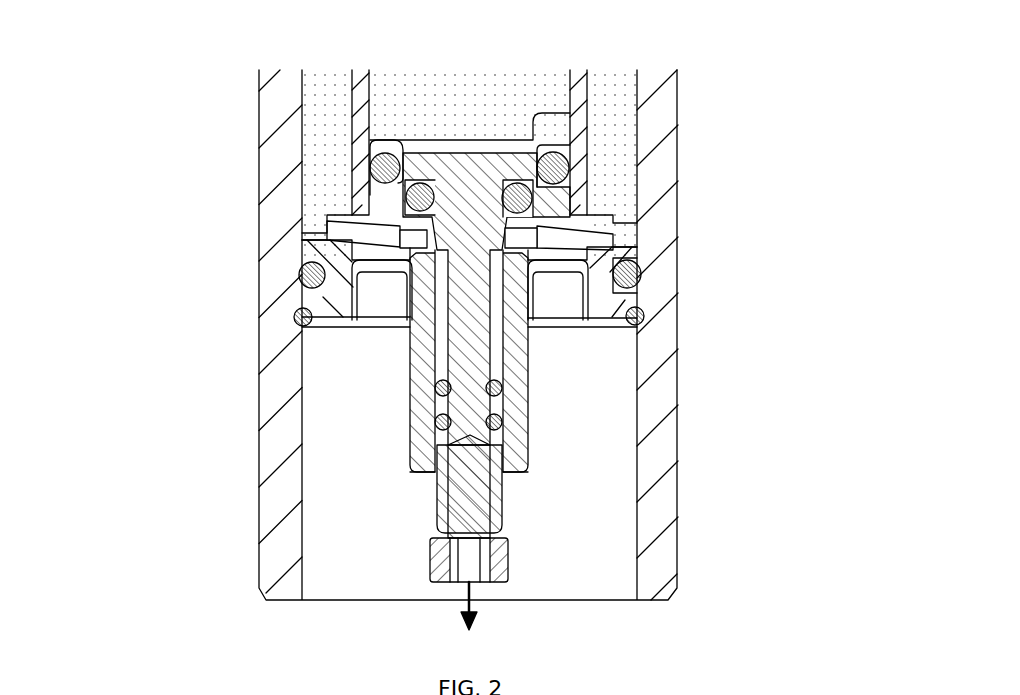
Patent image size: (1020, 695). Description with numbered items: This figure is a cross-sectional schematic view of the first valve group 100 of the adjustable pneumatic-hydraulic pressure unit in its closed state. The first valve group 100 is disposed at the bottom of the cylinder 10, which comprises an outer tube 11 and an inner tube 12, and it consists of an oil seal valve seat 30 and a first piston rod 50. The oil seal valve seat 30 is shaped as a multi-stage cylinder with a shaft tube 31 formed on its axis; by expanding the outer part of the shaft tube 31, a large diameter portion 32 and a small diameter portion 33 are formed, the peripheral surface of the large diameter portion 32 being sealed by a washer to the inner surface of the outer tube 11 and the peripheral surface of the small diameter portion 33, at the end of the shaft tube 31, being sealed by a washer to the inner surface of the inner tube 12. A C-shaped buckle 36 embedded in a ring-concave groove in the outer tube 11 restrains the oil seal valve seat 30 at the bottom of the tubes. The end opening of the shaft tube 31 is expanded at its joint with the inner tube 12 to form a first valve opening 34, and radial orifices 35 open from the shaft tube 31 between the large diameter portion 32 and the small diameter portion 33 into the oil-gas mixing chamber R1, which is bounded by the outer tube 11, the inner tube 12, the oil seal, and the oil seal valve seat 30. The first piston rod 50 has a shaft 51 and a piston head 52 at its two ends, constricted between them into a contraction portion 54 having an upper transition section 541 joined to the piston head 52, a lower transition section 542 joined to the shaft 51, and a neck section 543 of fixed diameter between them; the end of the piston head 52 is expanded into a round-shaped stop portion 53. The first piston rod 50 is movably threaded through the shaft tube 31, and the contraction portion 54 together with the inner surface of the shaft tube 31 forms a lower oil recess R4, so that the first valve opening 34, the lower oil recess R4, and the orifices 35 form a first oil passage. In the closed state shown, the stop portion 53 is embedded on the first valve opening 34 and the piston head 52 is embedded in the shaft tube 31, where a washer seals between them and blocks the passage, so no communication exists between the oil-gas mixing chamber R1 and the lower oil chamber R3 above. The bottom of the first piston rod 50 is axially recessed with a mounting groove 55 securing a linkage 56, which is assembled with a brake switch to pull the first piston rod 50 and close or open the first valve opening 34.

The cylinder 10 is at (370, 335).
The outer tube 11 is at (280, 123).
The inner tube 12 is at (363, 153).
The oil seal valve seat 30 is at (443, 318).
The shaft tube 31 is at (425, 460).
The large diameter portion 32 is at (333, 280).
The small diameter portion 33 is at (370, 200).
The first valve opening 34 is at (570, 113).
The orifices 35 is at (367, 238).
The C-shaped buckle 36 is at (300, 318).
The first piston rod 50 is at (505, 400).
The shaft 51 is at (528, 336).
The piston head 52 is at (568, 168).
The stop portion 53 is at (516, 162).
The contraction portion 54 is at (562, 266).
The upper transition section 541 is at (608, 222).
The lower transition section 542 is at (640, 312).
The neck section 543 is at (627, 270).
The mounting groove 55 is at (480, 510).
The linkage 56 is at (497, 567).
The first valve group 100 is at (441, 318).
The oil-gas mixing chamber R1 is at (316, 92).
The lower oil chamber R3 is at (418, 86).
The lower oil recess R4 is at (426, 280).